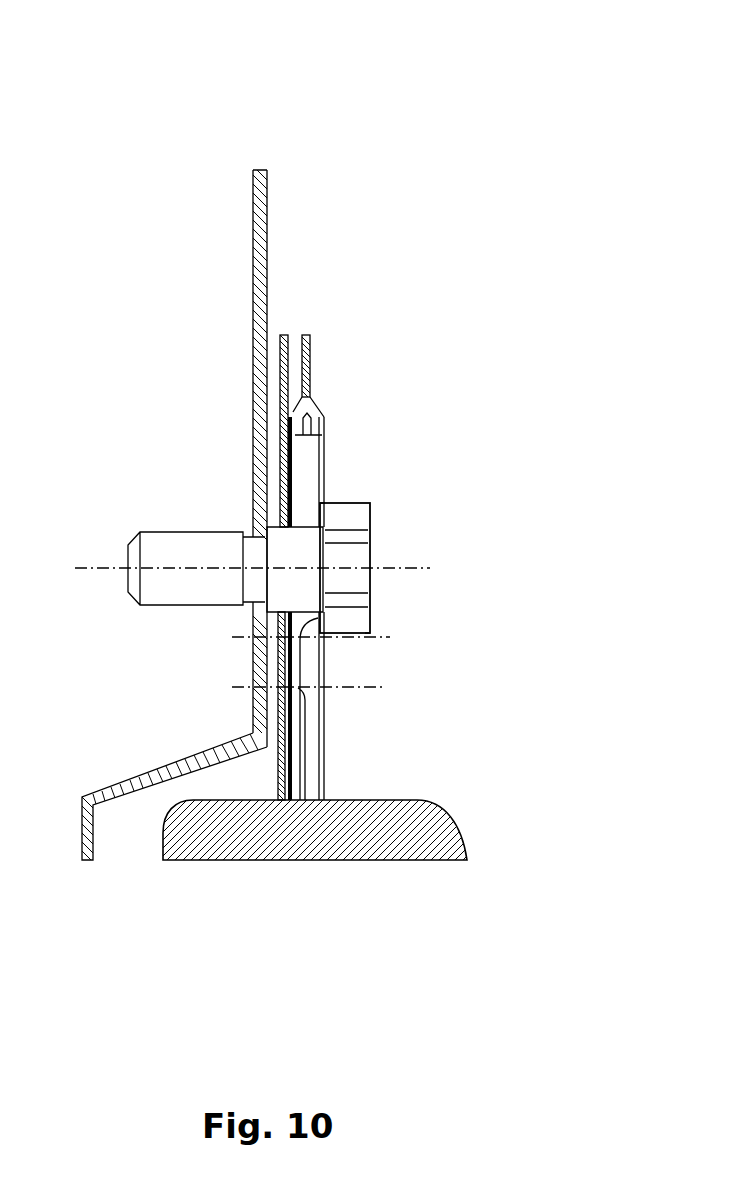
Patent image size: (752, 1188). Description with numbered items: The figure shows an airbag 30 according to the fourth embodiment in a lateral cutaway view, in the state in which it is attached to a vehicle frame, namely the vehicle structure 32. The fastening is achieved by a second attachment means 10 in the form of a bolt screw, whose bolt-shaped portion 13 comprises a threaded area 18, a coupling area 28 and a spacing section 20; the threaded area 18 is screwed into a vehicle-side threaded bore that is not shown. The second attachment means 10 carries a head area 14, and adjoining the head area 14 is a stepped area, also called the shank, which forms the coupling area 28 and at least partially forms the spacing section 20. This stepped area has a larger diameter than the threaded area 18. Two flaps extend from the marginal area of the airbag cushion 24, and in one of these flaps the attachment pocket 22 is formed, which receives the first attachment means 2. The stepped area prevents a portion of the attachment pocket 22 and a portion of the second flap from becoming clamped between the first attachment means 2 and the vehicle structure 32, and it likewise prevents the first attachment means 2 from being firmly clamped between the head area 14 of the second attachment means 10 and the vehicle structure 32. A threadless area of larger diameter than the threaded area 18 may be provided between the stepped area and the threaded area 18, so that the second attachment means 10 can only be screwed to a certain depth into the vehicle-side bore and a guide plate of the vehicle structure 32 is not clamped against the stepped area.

The airbag 30 is at (464, 41).
The vehicle structure 32 is at (250, 228).
The bolt-shaped portion 13 is at (204, 390).
The threaded area 18 is at (192, 538).
The spacing section 20 is at (275, 540).
The coupling area 28 is at (308, 545).
The attachment pocket 22 is at (314, 410).
The first attachment means 2 is at (293, 485).
The second attachment means 10 is at (422, 530).
The head area 14 is at (357, 575).
The airbag cushion 24 is at (433, 843).